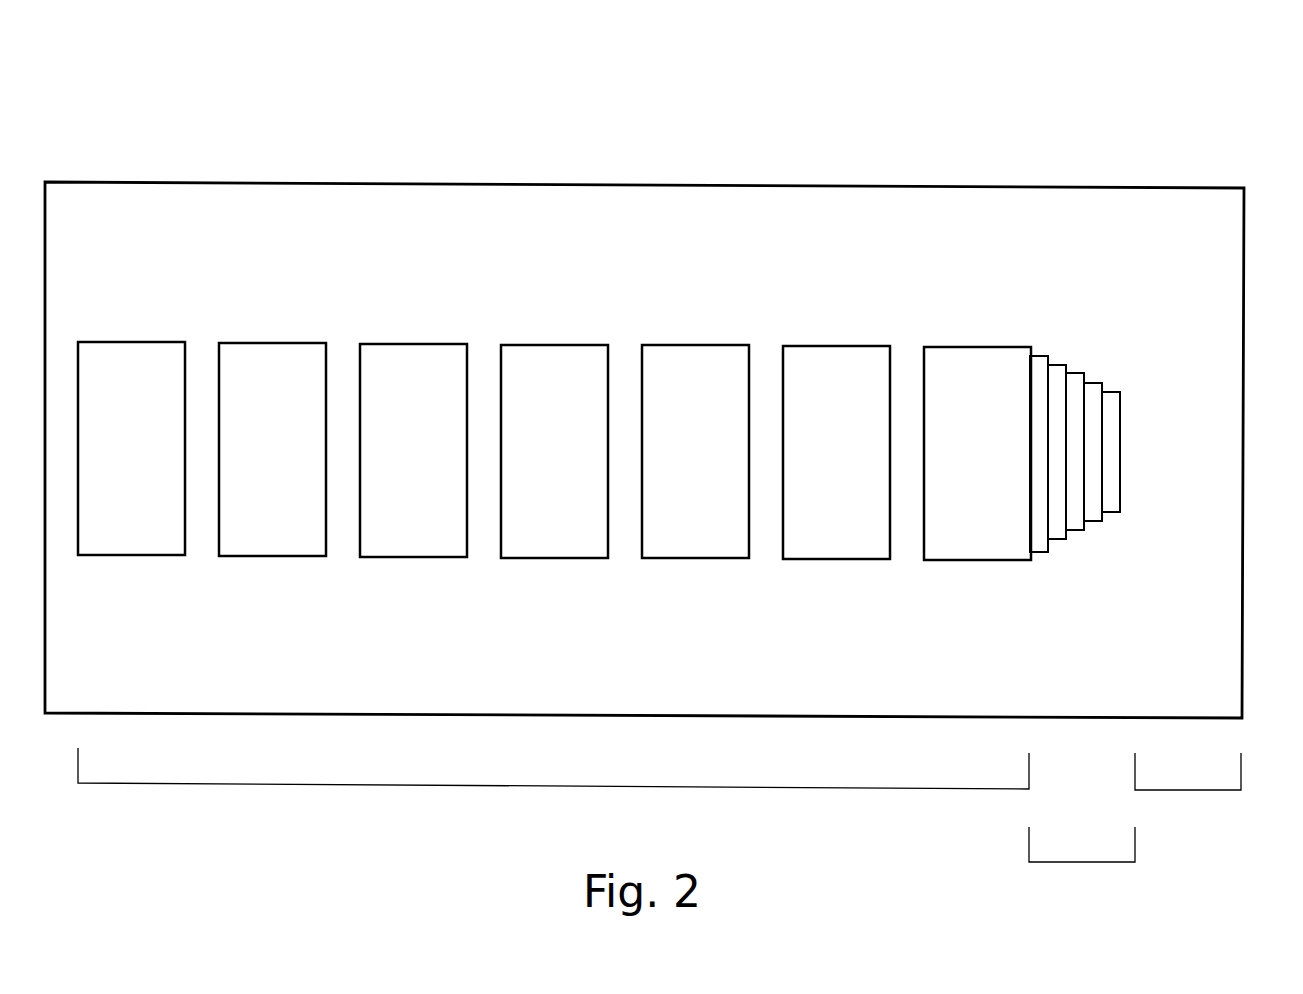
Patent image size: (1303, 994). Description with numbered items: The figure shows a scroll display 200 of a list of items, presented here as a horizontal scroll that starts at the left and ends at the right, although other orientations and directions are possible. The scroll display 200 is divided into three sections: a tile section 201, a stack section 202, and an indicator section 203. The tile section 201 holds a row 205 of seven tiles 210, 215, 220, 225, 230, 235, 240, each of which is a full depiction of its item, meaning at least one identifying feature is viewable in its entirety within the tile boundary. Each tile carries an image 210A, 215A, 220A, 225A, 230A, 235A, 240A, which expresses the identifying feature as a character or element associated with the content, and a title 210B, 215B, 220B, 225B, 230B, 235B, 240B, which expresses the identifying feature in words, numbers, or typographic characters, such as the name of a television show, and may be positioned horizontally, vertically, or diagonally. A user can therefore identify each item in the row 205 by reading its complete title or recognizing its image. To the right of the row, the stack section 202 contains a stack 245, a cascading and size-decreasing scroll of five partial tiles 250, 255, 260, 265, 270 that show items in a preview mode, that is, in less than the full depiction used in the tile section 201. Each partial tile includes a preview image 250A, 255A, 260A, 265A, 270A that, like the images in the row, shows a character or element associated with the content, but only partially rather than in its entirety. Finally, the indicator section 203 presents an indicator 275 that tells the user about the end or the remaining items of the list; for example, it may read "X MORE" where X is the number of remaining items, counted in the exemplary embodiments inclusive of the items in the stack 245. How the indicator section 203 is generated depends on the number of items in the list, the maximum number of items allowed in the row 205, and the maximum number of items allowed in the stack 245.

The scroll display 200 is at (1125, 44).
The tile section 201 is at (395, 783).
The stack section 202 is at (1082, 862).
The indicator section 203 is at (1188, 790).
The row 205 is at (343, 218).
The tile 210 is at (132, 270).
The image 210A is at (114, 378).
The title 210B is at (105, 538).
The tile 215 is at (273, 270).
The image 215A is at (255, 378).
The title 215B is at (246, 539).
The tile 220 is at (414, 270).
The image 220A is at (396, 378).
The title 220B is at (387, 540).
The tile 225 is at (555, 270).
The image 225A is at (537, 378).
The title 225B is at (528, 541).
The tile 230 is at (696, 270).
The image 230A is at (678, 378).
The title 230B is at (669, 541).
The tile 235 is at (837, 270).
The image 235A is at (819, 378).
The title 235B is at (810, 542).
The tile 240 is at (978, 270).
The image 240A is at (960, 378).
The title 240B is at (951, 543).
The stack 245 is at (1102, 225).
The partial tile 250 is at (1040, 578).
The preview image 250A is at (1040, 360).
The partial tile 255 is at (1060, 558).
The preview image 255A is at (1058, 368).
The partial tile 260 is at (1082, 550).
The preview image 260A is at (1078, 377).
The partial tile 265 is at (1100, 533).
The preview image 265A is at (1097, 385).
The partial tile 270 is at (1128, 518).
The preview image 270A is at (1122, 392).
The indicator 275 is at (1172, 437).